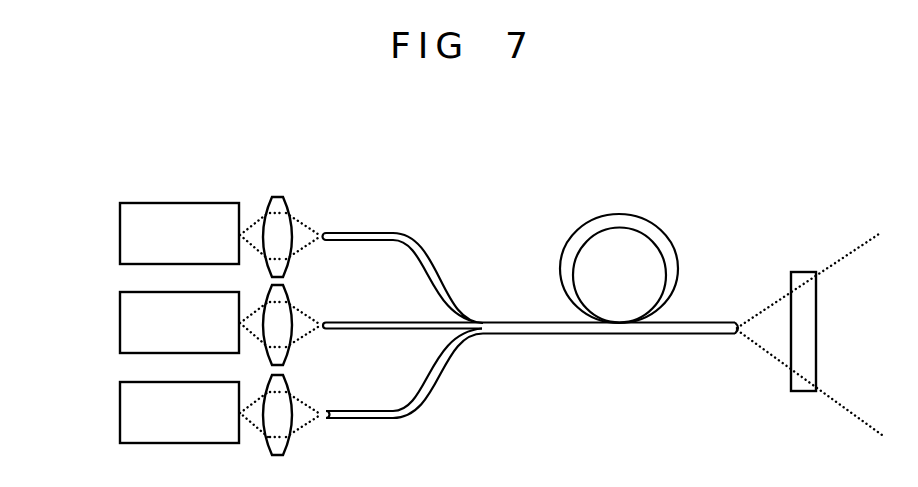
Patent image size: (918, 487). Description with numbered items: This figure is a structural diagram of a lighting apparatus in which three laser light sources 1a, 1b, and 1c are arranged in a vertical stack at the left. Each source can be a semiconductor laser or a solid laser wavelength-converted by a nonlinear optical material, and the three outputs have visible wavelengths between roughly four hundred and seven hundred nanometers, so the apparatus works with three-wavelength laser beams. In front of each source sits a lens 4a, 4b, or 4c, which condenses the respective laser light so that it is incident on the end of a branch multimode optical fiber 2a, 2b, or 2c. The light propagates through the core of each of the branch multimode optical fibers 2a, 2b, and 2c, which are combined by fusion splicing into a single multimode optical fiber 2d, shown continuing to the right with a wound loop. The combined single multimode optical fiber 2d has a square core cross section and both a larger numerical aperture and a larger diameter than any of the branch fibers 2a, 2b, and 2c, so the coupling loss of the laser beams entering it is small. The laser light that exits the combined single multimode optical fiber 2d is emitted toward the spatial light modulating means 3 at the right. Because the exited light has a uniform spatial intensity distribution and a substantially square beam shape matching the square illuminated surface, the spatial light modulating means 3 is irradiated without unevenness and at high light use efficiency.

The light source 1a is at (123, 229).
The light source 1b is at (123, 318).
The light source 1c is at (123, 408).
The lens 4a is at (286, 219).
The lens 4b is at (286, 307).
The lens 4c is at (286, 397).
The multimode optical fiber 2a is at (421, 240).
The multimode optical fiber 2b is at (530, 313).
The multimode optical fiber 2c is at (424, 400).
The combined single multimode optical fiber 2d is at (633, 215).
The spatial light modulating means 3 is at (798, 270).